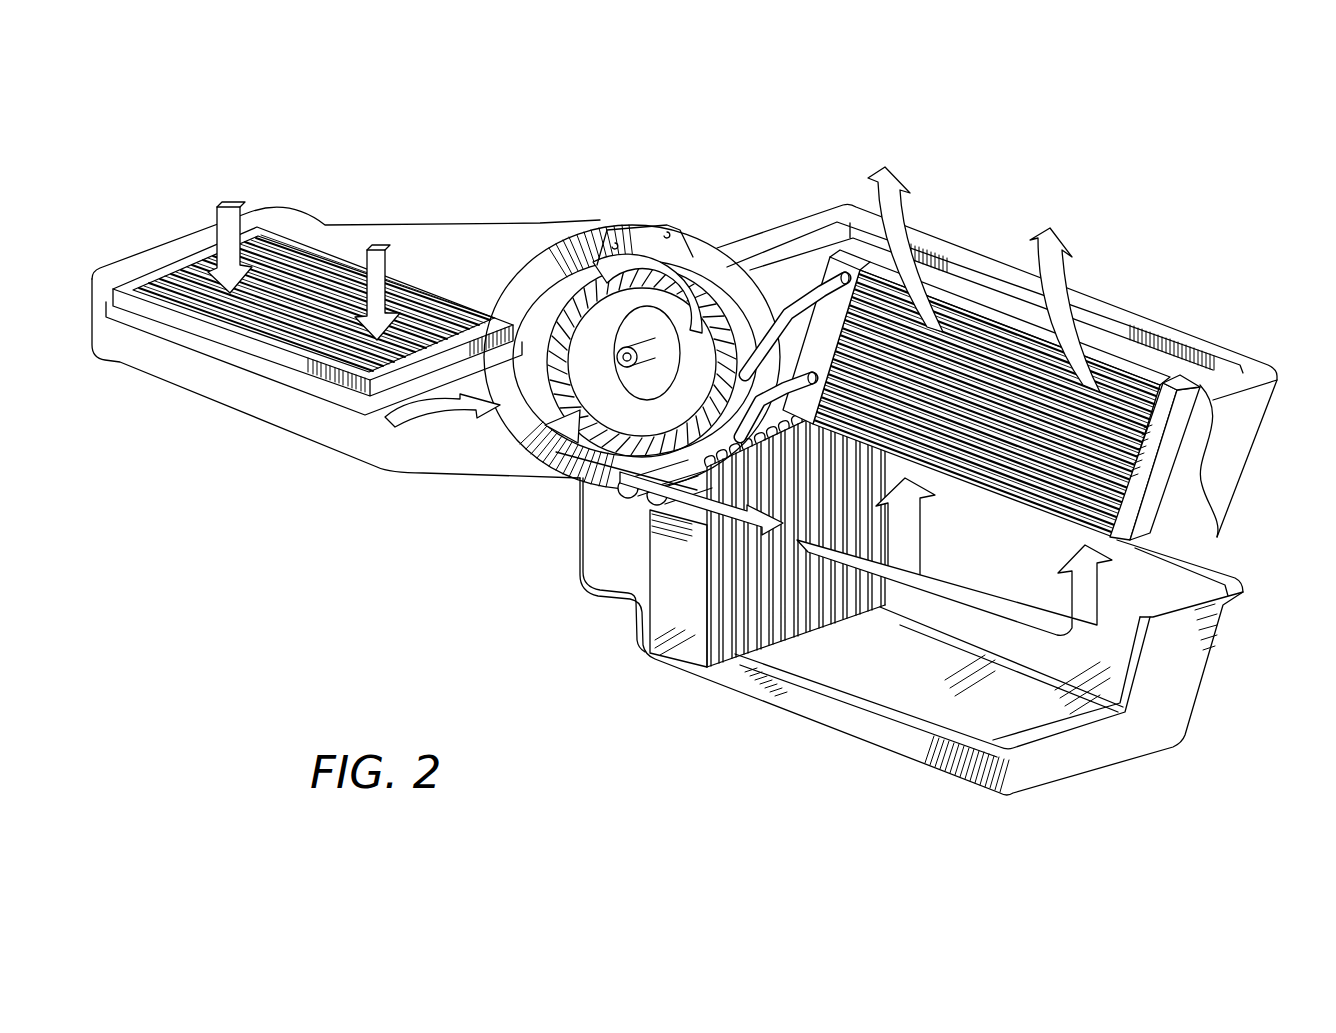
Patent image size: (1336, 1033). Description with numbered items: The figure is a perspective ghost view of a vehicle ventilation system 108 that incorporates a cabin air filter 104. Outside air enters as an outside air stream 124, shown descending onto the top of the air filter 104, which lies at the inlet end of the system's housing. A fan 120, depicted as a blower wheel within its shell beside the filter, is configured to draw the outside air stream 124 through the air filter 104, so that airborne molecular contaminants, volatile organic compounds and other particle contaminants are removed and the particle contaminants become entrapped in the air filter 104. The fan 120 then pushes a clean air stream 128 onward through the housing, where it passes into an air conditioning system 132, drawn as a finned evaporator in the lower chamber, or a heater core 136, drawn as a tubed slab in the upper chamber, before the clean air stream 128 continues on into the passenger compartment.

The ventilation system 108 is at (378, 110).
The cabin air filter 104 is at (240, 352).
The fan 120 is at (647, 224).
The outside air stream 124 is at (228, 205).
The clean air stream 128 is at (890, 205).
The air conditioning system 132 is at (668, 655).
The heater core 136 is at (1128, 360).